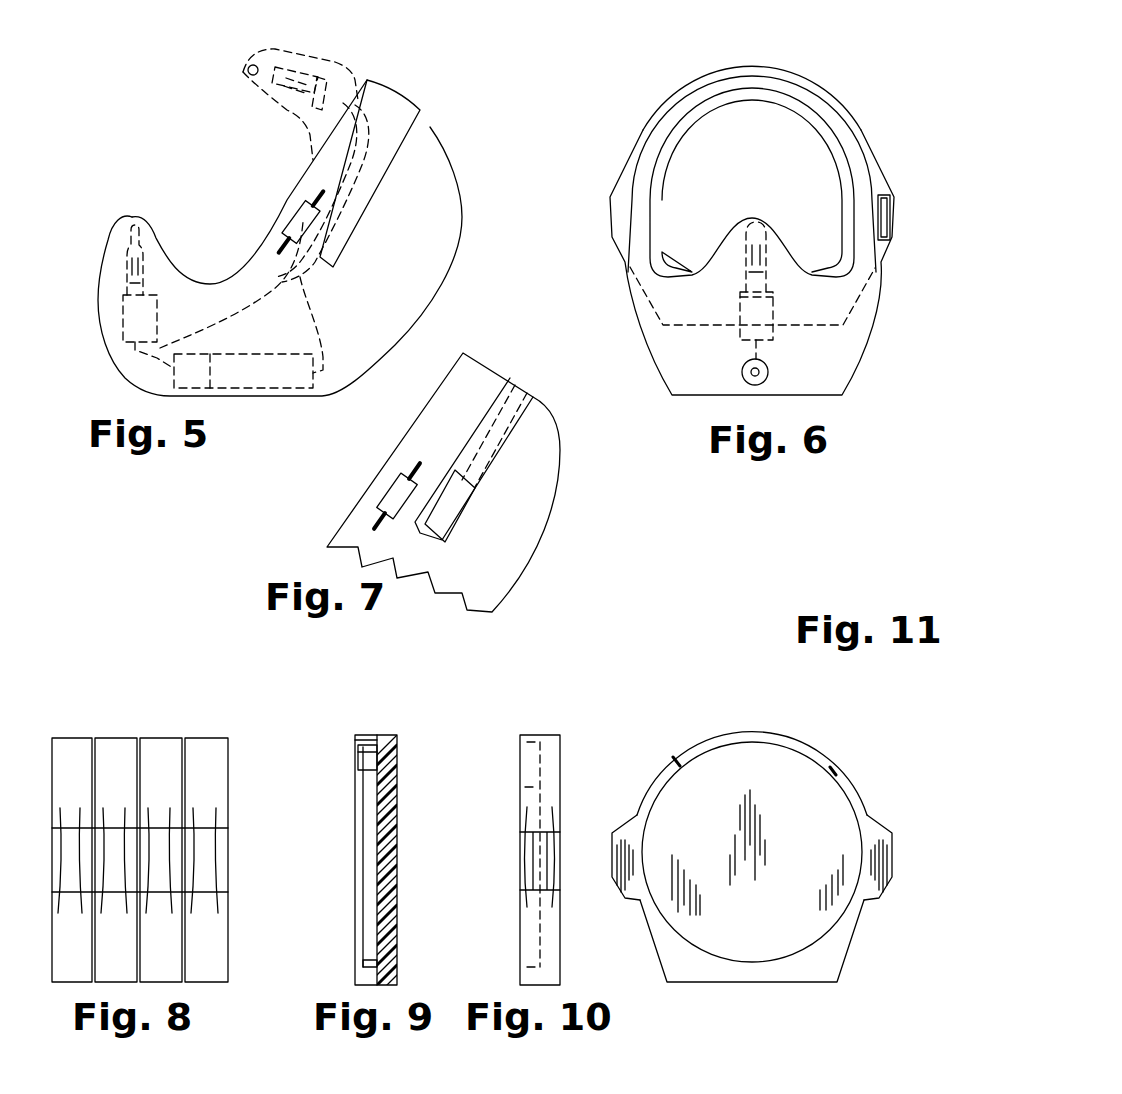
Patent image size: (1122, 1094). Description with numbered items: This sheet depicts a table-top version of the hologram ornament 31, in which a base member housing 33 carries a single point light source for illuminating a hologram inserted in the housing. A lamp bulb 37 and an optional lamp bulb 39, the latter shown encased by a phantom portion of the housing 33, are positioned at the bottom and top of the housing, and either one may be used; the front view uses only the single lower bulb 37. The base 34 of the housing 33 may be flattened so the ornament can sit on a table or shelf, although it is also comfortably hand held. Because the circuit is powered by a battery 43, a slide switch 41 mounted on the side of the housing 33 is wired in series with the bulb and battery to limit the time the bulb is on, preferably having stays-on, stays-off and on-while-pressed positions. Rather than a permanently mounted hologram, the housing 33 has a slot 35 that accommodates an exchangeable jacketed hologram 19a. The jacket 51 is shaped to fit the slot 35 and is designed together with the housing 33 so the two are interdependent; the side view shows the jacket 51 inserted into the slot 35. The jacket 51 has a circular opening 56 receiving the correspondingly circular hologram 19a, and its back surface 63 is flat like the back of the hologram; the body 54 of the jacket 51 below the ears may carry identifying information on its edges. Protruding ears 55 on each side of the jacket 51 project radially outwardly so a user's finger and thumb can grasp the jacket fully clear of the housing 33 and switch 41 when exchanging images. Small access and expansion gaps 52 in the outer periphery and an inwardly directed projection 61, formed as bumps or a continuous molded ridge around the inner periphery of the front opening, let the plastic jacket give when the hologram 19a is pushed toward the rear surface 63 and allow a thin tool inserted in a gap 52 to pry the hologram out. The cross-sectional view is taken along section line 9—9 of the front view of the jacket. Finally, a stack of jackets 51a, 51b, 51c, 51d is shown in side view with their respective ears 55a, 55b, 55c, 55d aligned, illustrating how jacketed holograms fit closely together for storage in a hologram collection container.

In FIG. 11, the section line 9 is at (757, 720).
In FIG. 6, the jacketed hologram 19a is at (778, 127).
In FIG. 9, the jacketed hologram 19a is at (368, 850).
In FIG. 5, the headgear assembly 31 is at (420, 68).
In FIG. 7, the headgear assembly 31 is at (497, 365).
In FIG. 5, the base member housing 33 is at (453, 150).
In FIG. 6, the base member housing 33 is at (697, 83).
In FIG. 7, the base member housing 33 is at (550, 420).
In FIG. 5, the base 34 is at (283, 397).
In FIG. 5, the slot 35 is at (390, 170).
In FIG. 7, the slot 35 is at (447, 530).
In FIG. 5, the lamp bulb 37 is at (145, 272).
In FIG. 6, the lamp bulb 37 is at (775, 293).
In FIG. 5, the lamp bulb 39 is at (297, 77).
In FIG. 5, the switch 41 is at (297, 207).
In FIG. 6, the switch 41 is at (886, 210).
In FIG. 7, the switch 41 is at (383, 477).
In FIG. 5, the battery 43 is at (290, 377).
In FIG. 6, the battery 43 is at (768, 365).
In FIG. 6, the jacket 51 is at (653, 110).
In FIG. 7, the jacket 51 is at (513, 383).
In FIG. 9, the jacket 51 is at (380, 733).
In FIG. 10, the jacket 51 is at (540, 735).
In FIG. 11, the jacket 51 is at (725, 730).
In FIG. 8, the jacket 51a is at (67, 737).
In FIG. 8, the jacket 51b is at (112, 737).
In FIG. 8, the jacket 51c is at (158, 737).
In FIG. 8, the jacket 51d is at (212, 737).
In FIG. 9, the access and expansion gaps 52 is at (360, 768).
In FIG. 11, the access and expansion gaps 52 is at (673, 760).
In FIG. 11, the mask body 54 is at (798, 985).
In FIG. 6, the protruding ears 55 is at (608, 213).
In FIG. 7, the protruding ears 55 is at (450, 503).
In FIG. 10, the protruding ears 55 is at (537, 863).
In FIG. 11, the protruding ears 55 is at (608, 847).
In FIG. 8, the elastic section a 55a is at (73, 878).
In FIG. 8, the elastic section b 55b is at (118, 867).
In FIG. 8, the elastic section c 55c is at (163, 855).
In FIG. 8, the elastic section d 55d is at (208, 850).
In FIG. 9, the circular opening 56 is at (378, 752).
In FIG. 10, the circular opening 56 is at (520, 760).
In FIG. 11, the circular opening 56 is at (762, 745).
In FIG. 9, the inwardly directed projection 61 is at (358, 758).
In FIG. 9, the back surface 63 is at (368, 933).
In FIG. 10, the back surface 63 is at (520, 780).
In FIG. 11, the back surface 63 is at (813, 753).